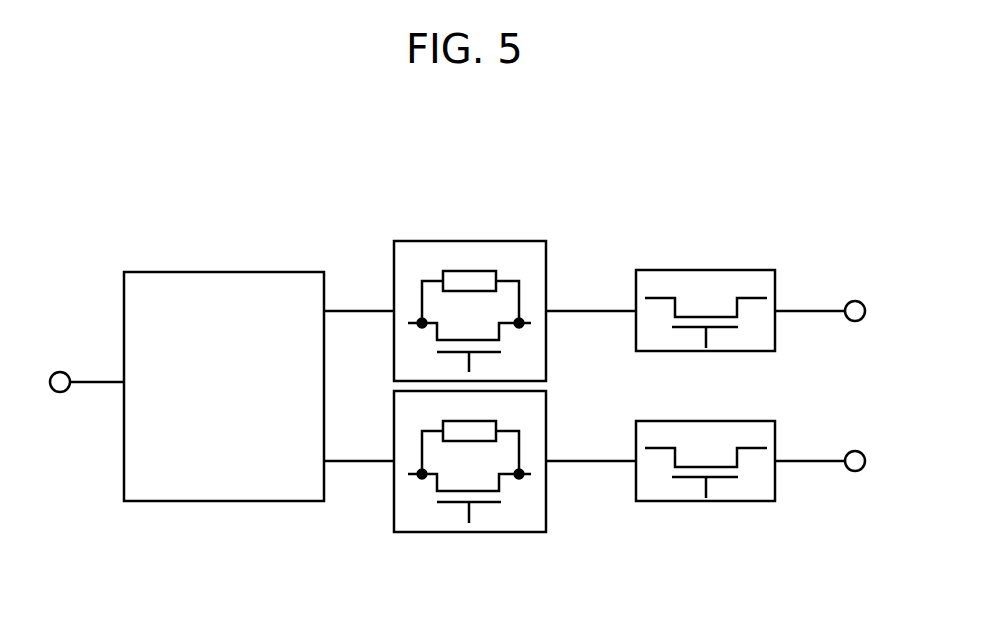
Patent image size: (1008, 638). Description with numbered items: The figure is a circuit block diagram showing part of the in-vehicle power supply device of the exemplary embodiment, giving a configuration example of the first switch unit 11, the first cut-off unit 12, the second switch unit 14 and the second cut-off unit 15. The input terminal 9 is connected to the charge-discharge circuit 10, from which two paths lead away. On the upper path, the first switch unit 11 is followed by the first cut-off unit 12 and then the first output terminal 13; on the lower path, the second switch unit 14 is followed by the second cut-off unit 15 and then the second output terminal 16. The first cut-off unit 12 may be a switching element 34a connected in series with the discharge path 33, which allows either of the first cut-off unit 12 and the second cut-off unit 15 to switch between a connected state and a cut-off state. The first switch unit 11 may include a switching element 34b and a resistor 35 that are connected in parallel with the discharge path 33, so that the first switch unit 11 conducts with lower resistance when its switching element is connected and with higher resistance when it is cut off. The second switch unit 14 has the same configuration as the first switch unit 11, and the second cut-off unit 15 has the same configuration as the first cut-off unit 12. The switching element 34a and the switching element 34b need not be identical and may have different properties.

The input terminal 9 is at (60, 372).
The charge-discharge circuit 10 is at (203, 271).
The first switch unit 11 is at (479, 268).
The first cut-off unit 12 is at (712, 253).
The first output terminal 13 is at (858, 301).
The second switch unit 14 is at (427, 532).
The second cut-off unit 15 is at (678, 501).
The second output terminal 16 is at (858, 452).
The discharge path 33 is at (591, 310).
The switching element 34a is at (721, 308).
The switching element 34b is at (492, 333).
The resistor 35 is at (468, 271).